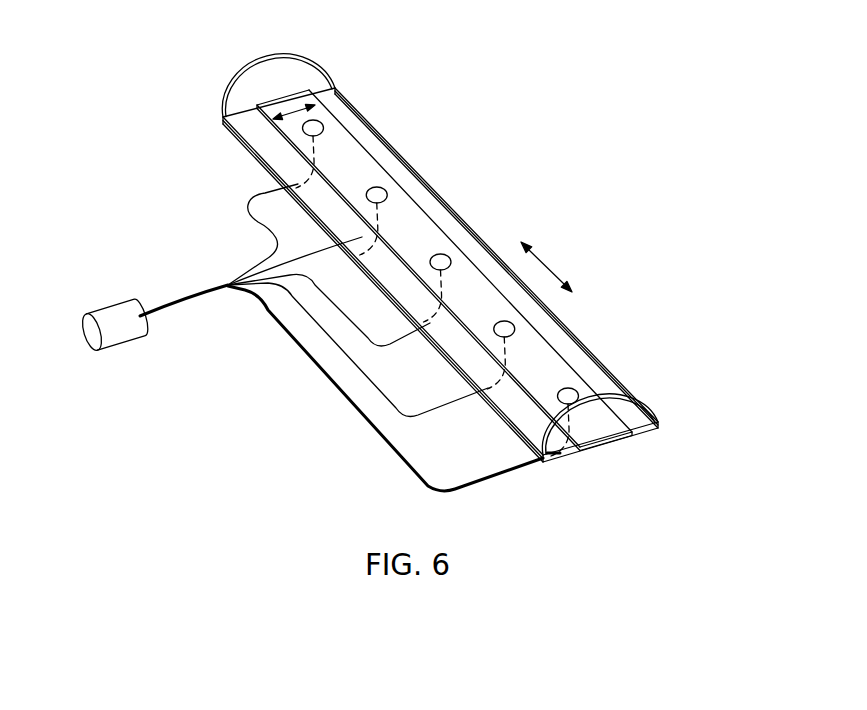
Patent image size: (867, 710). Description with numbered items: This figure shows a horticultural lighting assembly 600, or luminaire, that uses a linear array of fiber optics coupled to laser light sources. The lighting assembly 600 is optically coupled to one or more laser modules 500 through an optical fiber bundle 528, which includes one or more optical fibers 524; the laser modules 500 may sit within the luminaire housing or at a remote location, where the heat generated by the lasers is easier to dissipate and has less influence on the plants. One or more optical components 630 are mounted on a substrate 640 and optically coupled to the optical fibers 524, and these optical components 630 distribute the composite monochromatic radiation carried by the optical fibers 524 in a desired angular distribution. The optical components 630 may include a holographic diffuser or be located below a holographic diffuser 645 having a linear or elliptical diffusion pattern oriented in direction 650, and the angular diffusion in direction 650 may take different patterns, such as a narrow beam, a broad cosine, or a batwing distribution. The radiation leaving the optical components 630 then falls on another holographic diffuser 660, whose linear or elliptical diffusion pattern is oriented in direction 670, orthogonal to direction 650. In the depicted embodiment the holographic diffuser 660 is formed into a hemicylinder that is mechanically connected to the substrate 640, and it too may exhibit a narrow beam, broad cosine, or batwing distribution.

The laser module 500 is at (118, 348).
The optical fiber 524 is at (388, 443).
The optical fiber bundle 528 is at (187, 301).
The horticultural lighting assembly 600 is at (173, 200).
The optical component 630 is at (316, 120).
The substrate 640 is at (650, 433).
The holographic diffuser 645 is at (350, 132).
The direction 650 is at (287, 103).
The holographic diffuser 660 is at (300, 53).
The direction 670 is at (555, 267).